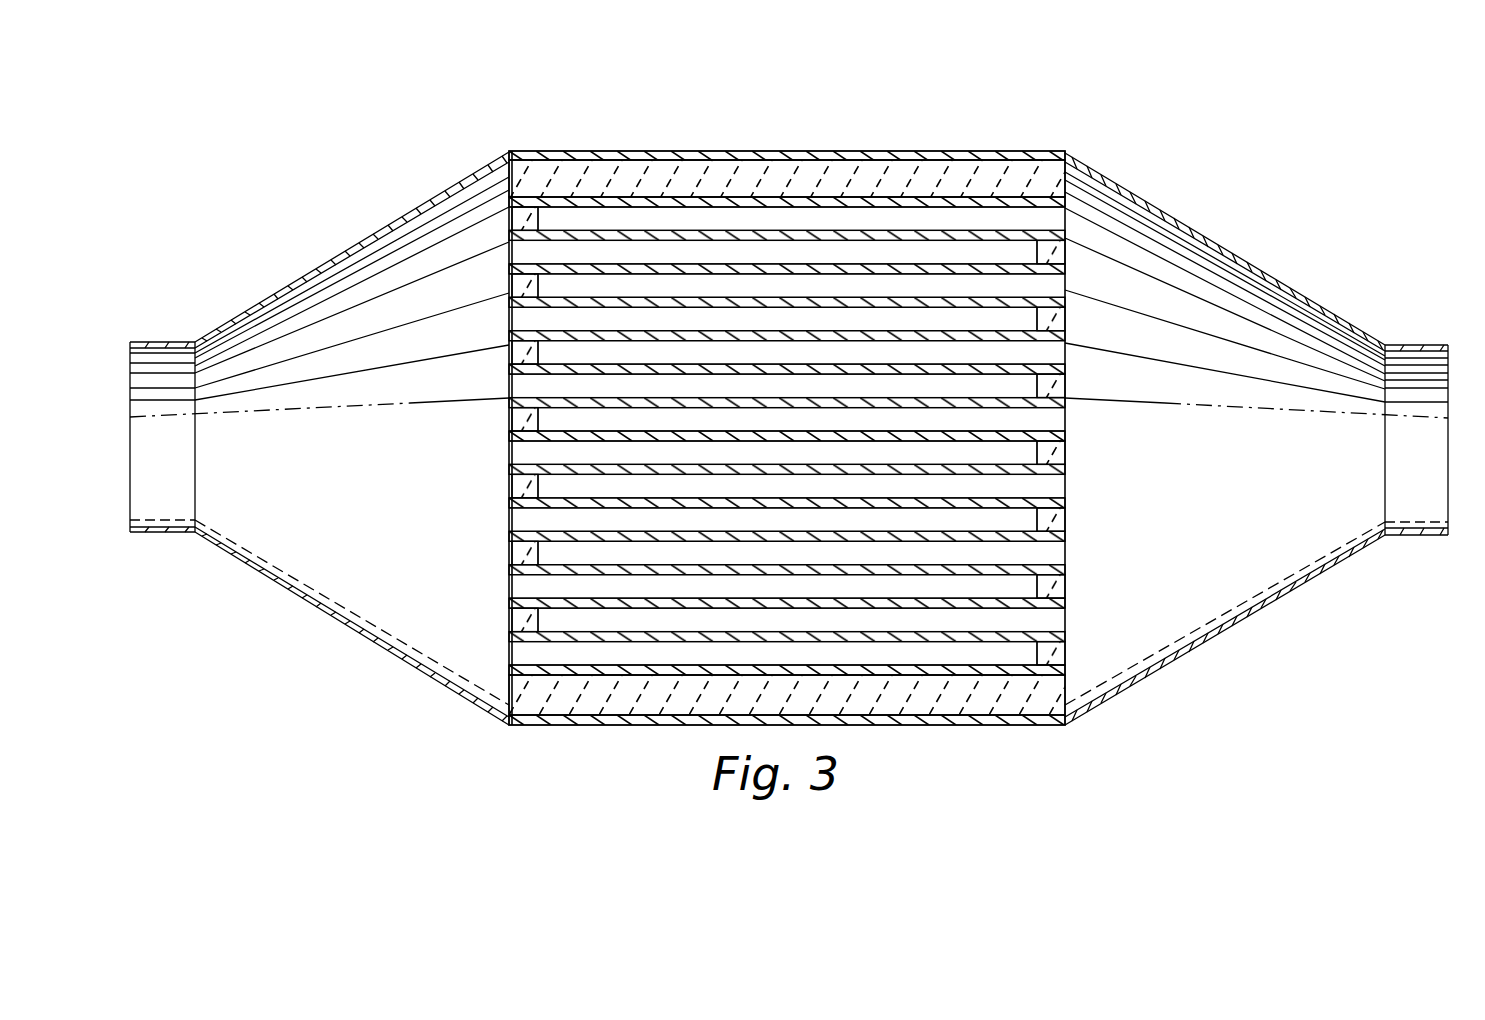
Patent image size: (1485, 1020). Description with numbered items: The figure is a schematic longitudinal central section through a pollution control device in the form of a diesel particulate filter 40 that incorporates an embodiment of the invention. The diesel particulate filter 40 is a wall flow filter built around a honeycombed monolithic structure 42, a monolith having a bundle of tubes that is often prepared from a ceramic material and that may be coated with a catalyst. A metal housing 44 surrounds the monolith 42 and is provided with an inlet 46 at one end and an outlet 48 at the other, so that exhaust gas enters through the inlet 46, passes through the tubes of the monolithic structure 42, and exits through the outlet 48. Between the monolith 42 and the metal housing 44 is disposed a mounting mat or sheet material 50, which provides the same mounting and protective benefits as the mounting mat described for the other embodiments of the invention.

The diesel particulate filter 40 is at (1152, 128).
The monolithic structure 42 is at (1098, 457).
The metal housing 44 is at (877, 151).
The inlet 46 is at (368, 638).
The outlet 48 is at (1305, 583).
The mounting mat 50 is at (960, 165).